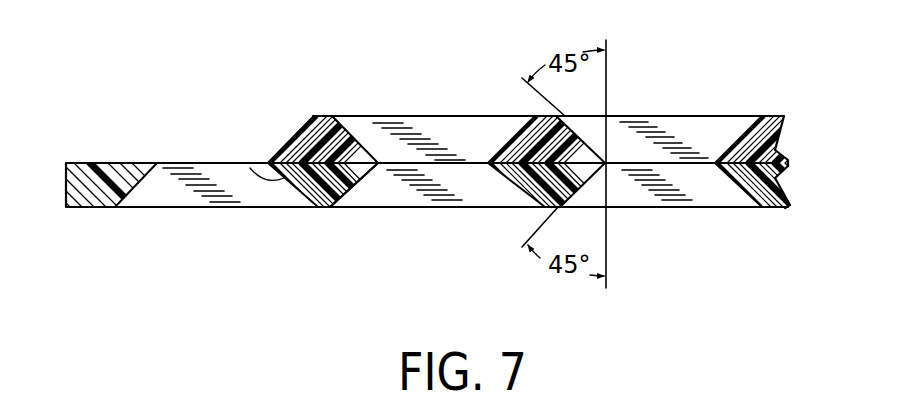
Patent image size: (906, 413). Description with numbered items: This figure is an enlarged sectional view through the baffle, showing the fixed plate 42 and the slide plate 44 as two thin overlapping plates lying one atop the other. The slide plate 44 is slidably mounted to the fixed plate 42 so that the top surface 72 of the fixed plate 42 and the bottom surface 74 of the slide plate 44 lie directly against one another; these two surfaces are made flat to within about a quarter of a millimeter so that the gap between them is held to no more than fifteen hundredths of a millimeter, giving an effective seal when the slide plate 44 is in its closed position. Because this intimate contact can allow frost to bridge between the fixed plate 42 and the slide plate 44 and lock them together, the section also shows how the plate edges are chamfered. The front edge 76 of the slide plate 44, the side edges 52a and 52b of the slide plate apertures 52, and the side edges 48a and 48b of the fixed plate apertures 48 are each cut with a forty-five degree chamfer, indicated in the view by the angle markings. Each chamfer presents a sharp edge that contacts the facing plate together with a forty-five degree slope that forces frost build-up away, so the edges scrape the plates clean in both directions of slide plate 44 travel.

The fixed plate 42 is at (321, 205).
The slide plate 44 is at (328, 116).
The fixed plate apertures 48 is at (688, 228).
The side edge of fixed plate aperture 48a is at (622, 255).
The side edge of fixed plate aperture 48b is at (742, 250).
The slide plate apertures 52 is at (687, 116).
The side edge of slide plate aperture 52a is at (587, 117).
The side edge of slide plate aperture 52b is at (742, 116).
The top surface 72 is at (90, 163).
The bottom surface 74 is at (262, 163).
The front edge 76 is at (298, 131).